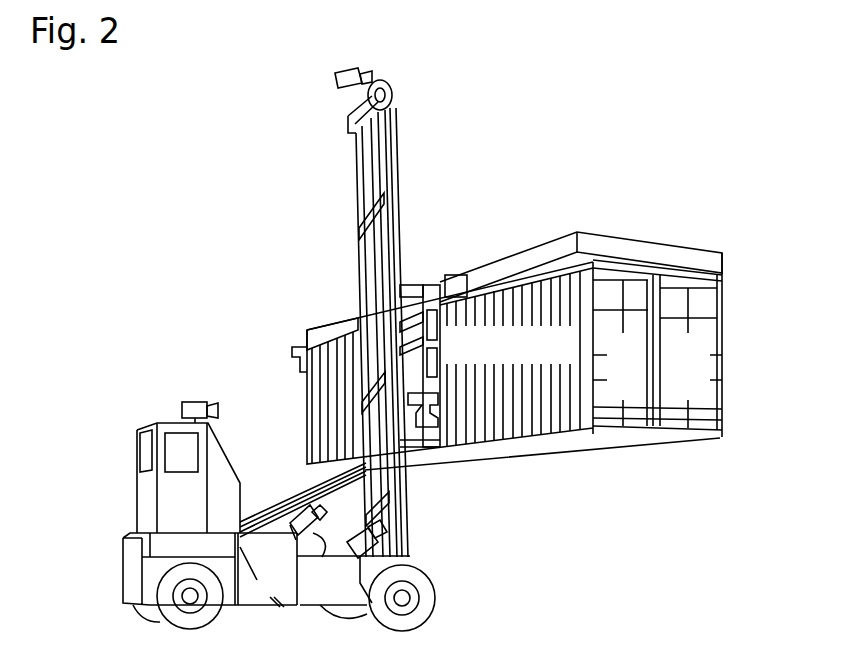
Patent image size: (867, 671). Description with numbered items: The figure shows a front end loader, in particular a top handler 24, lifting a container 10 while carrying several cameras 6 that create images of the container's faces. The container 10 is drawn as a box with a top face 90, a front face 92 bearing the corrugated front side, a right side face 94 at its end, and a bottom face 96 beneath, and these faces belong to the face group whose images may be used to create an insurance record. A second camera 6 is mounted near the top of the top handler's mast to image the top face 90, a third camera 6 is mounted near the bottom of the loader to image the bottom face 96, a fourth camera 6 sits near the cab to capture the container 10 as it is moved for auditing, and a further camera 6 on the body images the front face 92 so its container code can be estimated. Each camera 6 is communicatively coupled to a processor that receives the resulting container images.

The camera 6 is at (348, 66).
The top handler 24 is at (306, 170).
The container 10 is at (551, 130).
The top face 90 is at (597, 232).
The front face 92 is at (450, 363).
The side face 94 is at (657, 345).
The bottom face 96 is at (584, 440).